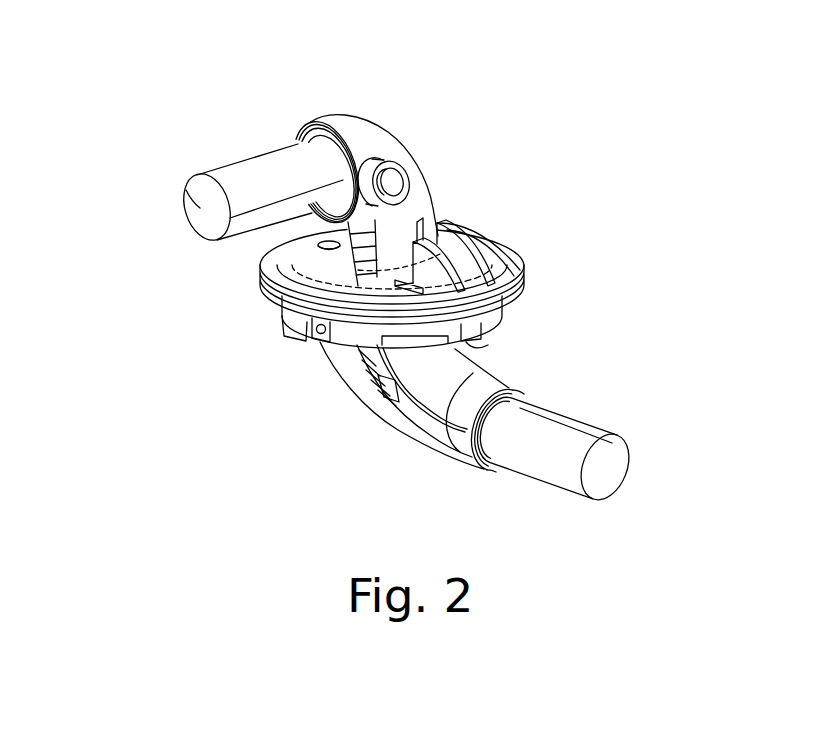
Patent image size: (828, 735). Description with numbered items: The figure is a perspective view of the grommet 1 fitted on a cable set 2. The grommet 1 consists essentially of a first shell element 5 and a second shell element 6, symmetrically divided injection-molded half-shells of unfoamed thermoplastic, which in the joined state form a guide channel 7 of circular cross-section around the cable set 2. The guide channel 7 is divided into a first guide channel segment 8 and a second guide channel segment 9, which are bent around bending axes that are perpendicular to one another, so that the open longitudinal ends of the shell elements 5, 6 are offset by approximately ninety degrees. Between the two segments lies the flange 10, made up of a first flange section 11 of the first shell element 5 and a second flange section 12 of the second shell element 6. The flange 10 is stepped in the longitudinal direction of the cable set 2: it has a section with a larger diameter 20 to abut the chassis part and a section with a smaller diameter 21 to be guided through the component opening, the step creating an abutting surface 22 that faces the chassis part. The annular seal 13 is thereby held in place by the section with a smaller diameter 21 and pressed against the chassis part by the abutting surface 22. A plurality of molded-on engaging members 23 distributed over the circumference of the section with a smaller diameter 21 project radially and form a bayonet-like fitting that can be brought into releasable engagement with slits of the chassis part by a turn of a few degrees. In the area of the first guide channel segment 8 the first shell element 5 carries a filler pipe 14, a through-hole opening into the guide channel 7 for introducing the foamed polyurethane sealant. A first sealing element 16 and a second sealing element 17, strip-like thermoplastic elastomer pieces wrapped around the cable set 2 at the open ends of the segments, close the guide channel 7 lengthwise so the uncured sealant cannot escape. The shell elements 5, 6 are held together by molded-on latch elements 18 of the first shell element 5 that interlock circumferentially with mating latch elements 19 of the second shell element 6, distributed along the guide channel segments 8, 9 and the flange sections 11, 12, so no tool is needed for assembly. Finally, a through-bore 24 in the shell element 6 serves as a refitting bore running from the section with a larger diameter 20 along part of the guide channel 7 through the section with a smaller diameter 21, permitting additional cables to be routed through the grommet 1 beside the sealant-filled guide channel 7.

The grommet 1 is at (262, 116).
The cable set 2 is at (182, 190).
The first shell element 5 is at (524, 256).
The second shell element 6 is at (373, 291).
The guide channel 7 is at (457, 254).
The first guide channel segment 8 is at (394, 112).
The second guide channel segment 9 is at (416, 455).
The flange 10 is at (508, 225).
The first flange section 11 is at (516, 252).
The second flange section 12 is at (272, 262).
The annular seal 13 is at (321, 351).
The filler pipe 14 is at (406, 174).
The first sealing element 16 is at (306, 122).
The second sealing element 17 is at (530, 390).
The latch elements 18 is at (330, 345).
The mating latch elements 19 is at (280, 287).
The section with a larger diameter 20 is at (321, 351).
The section with a smaller diameter 21 is at (290, 328).
The abutting surface 22 is at (272, 298).
The engaging members 23 is at (465, 340).
The through-bore 24 is at (322, 240).